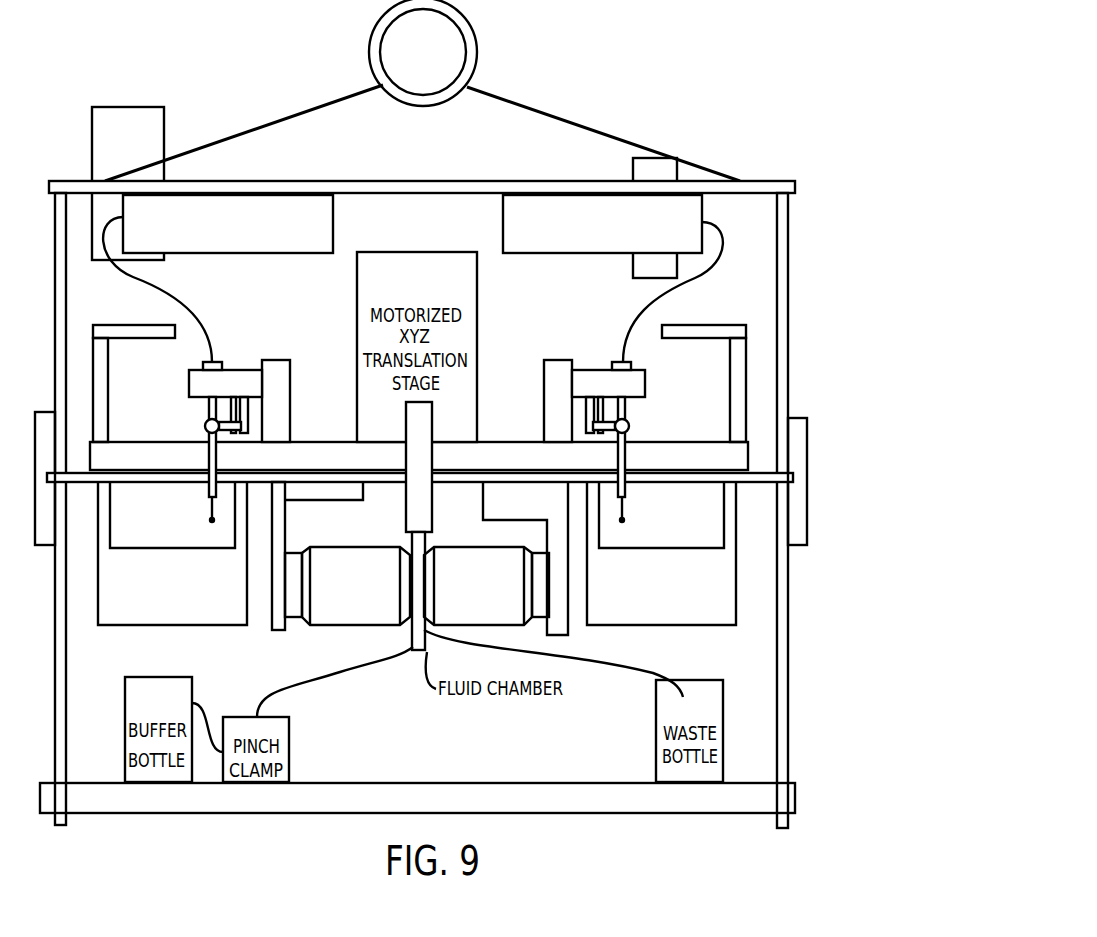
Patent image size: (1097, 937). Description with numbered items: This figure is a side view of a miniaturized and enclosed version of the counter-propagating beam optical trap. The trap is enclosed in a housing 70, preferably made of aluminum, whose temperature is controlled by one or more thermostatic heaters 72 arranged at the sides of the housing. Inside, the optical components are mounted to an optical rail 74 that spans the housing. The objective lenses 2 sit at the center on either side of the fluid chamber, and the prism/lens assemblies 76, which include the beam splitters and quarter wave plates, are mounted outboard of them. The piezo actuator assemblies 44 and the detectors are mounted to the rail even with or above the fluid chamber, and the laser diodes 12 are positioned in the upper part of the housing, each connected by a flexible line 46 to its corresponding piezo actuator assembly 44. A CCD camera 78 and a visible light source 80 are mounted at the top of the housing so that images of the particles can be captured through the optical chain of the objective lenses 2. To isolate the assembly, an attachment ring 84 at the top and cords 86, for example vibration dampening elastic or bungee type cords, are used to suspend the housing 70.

The objective lenses 2 is at (364, 577).
The laser diodes 12 is at (177, 236).
The piezo actuator assemblies 44 is at (193, 368).
The optical fiber 46 is at (196, 301).
The housing 70 is at (783, 690).
The thermostatic heaters 72 is at (38, 412).
The optical rail 74 is at (793, 477).
The prism/lens assemblies 76 is at (236, 604).
The CCD camera 78 is at (158, 173).
The visible light source 80 is at (643, 173).
The attachment ring 84 is at (370, 46).
The cords 86 is at (219, 136).